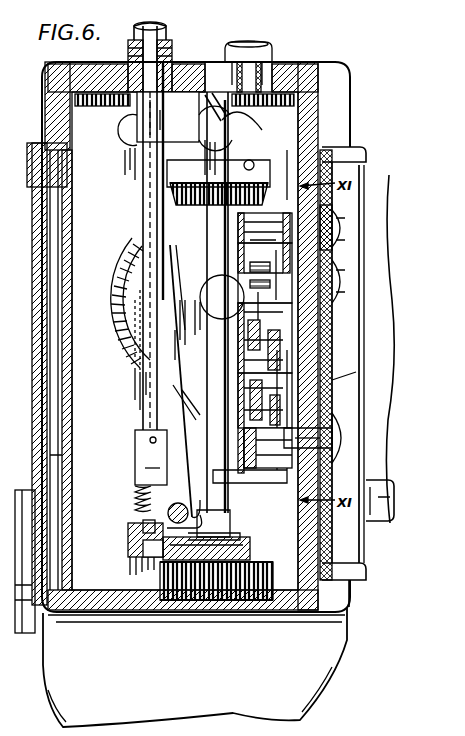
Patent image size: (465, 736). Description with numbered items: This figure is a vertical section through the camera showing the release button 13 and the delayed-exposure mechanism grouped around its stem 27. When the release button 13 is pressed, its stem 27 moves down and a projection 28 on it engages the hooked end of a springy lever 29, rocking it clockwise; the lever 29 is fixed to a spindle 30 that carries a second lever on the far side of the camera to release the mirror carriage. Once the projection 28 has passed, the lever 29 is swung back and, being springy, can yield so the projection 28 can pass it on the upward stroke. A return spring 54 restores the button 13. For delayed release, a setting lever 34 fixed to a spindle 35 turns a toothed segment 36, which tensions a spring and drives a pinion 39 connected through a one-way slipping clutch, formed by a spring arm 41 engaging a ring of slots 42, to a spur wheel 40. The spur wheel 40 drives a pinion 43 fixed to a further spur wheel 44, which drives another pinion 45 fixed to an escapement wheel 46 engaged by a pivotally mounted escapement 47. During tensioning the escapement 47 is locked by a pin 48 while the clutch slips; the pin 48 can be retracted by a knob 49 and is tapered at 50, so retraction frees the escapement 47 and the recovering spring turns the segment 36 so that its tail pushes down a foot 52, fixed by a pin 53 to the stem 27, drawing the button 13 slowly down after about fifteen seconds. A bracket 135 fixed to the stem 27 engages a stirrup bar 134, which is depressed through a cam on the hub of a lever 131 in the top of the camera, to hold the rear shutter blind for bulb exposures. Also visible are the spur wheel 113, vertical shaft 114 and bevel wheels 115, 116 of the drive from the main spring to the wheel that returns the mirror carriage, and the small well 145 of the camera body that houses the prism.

The release button 13 is at (150, 34).
The lever 131 is at (249, 45).
The stirrup bar 134 is at (265, 136).
The bracket 135 is at (147, 164).
The stem 27 is at (147, 188).
The bevel wheel 115 is at (150, 200).
The projection 28 is at (126, 244).
The lever 29 is at (166, 268).
The bevel wheel 116 is at (112, 333).
The slots 42 is at (292, 335).
The spur wheel 40 is at (290, 345).
The pin 48 is at (242, 214).
The taper 50 is at (240, 231).
The escapement wheel 46 is at (240, 260).
The pinion 43 is at (212, 280).
The escapement 47 is at (275, 225).
The knob 49 is at (329, 217).
The pinion 45 is at (332, 240).
The spur wheel 44 is at (332, 272).
The spring arm 41 is at (295, 333).
The pinion 39 is at (312, 350).
The setting lever 34 is at (332, 360).
The toothed segment 36 is at (342, 383).
The spindle 35 is at (339, 420).
The pin 53 is at (148, 440).
The return spring 54 is at (140, 496).
The spindle 30 is at (167, 513).
The foot 52 is at (258, 478).
The vertical shaft 114 is at (215, 490).
The spur wheel 113 is at (200, 598).
The well 145 is at (312, 662).